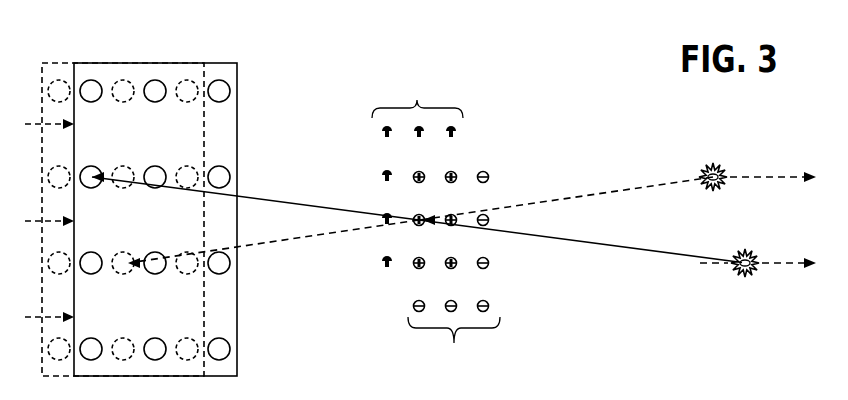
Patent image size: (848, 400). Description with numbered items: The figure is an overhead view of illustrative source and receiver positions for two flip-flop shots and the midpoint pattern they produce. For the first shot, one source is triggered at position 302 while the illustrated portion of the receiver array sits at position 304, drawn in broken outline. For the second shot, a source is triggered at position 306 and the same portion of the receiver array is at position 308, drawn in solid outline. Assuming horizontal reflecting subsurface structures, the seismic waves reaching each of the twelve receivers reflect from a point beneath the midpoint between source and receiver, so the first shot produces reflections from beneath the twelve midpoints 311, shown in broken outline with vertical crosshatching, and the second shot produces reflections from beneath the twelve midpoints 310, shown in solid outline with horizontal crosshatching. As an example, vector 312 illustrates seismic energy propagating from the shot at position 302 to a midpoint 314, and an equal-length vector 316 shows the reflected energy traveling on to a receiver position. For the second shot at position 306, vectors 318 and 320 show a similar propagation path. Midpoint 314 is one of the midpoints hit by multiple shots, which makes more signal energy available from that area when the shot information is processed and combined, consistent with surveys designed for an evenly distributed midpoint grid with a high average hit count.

The source position for first shot 302 is at (722, 183).
The receiver array position for first shot 304 is at (205, 72).
The source position for second shot 306 is at (753, 270).
The receiver array position for second shot 308 is at (237, 72).
The midpoints of second shot 310 is at (489, 176).
The midpoints of first shot 311 is at (417, 163).
The vector 312 is at (628, 187).
The midpoint 314 is at (430, 216).
The vector 316 is at (325, 236).
The vector 318 is at (622, 250).
The vector 320 is at (291, 203).